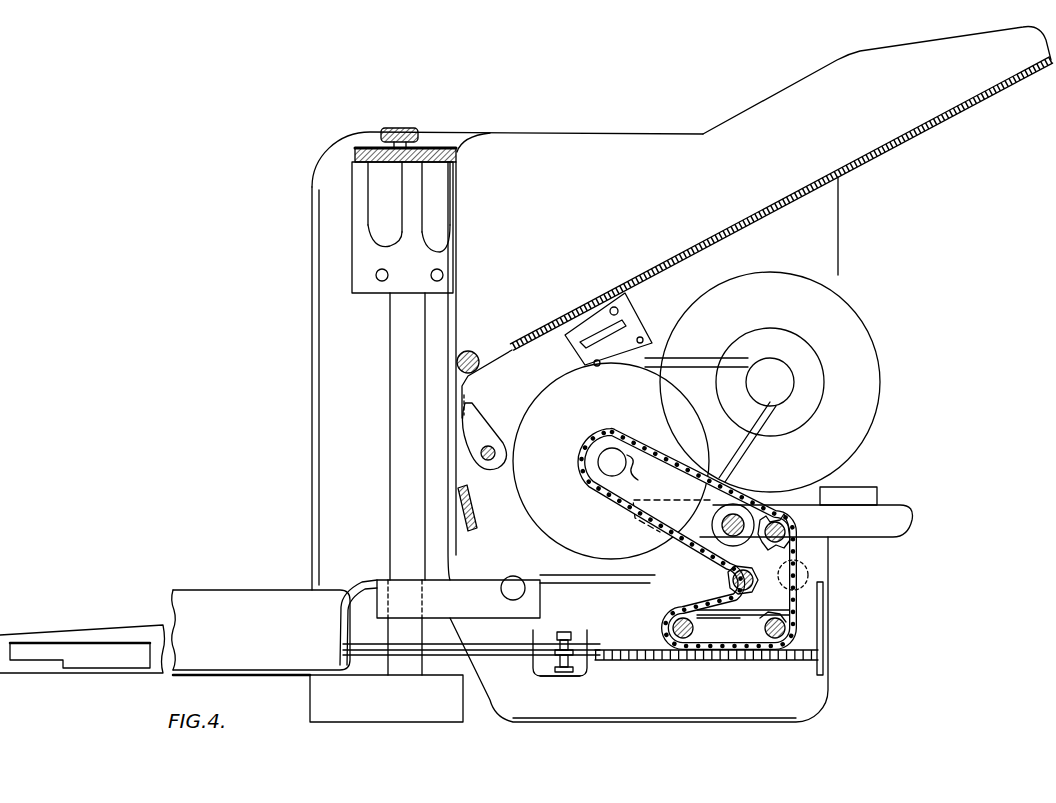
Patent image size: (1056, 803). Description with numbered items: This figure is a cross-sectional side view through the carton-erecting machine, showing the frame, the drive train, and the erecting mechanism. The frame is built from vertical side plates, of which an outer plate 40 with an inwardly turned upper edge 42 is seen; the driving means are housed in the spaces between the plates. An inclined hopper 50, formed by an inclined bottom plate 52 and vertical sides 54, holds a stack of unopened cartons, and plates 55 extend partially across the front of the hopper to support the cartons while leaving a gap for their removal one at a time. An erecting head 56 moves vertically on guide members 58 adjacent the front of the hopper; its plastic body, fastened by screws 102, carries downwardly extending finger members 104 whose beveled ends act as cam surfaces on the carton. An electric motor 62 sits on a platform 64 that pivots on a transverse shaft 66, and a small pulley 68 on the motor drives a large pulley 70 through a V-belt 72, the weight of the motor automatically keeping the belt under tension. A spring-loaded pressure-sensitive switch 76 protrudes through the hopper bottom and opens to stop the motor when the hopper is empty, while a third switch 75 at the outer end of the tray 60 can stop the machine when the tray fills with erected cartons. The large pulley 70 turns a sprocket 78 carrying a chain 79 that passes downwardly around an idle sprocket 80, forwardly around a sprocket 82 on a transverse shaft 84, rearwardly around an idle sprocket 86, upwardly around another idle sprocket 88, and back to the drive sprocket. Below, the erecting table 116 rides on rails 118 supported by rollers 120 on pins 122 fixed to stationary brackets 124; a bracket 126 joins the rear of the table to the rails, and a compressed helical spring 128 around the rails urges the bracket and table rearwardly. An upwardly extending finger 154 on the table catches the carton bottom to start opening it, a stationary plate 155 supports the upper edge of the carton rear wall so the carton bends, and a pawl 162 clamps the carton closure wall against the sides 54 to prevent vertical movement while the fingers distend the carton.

The outer plate 40 is at (343, 158).
The inwardly turned upper edge 42 is at (447, 136).
The inclined hopper 50 is at (765, 105).
The inclined bottom plate 52 is at (666, 275).
The vertical side 54 is at (804, 160).
The plate 55 is at (451, 305).
The erecting head 56 is at (362, 212).
The guide member 58 is at (390, 458).
The tray 60 is at (222, 648).
The electric motor 62 is at (862, 404).
The platform 64 is at (872, 524).
The transversely extending shaft 66 is at (720, 532).
The small pulley 68 is at (796, 378).
The large pulley 70 is at (526, 514).
The V-belt 72 is at (746, 450).
The third switch 75 is at (50, 662).
The pressure-sensitive switch 76 is at (627, 318).
The sprocket 78 is at (598, 442).
The chain 79 is at (610, 493).
The idle sprocket 80 is at (730, 573).
The sprocket 82 is at (698, 614).
The shaft 84 is at (662, 630).
The idle sprocket 86 is at (766, 640).
The idle sprocket 88 is at (796, 538).
The screw 102 is at (400, 127).
The finger member 104 is at (435, 247).
The erecting table 116 is at (345, 580).
The rail 118 is at (517, 650).
The roller 120 is at (574, 645).
The pin 122 is at (563, 631).
The stationary bracket 124 is at (580, 676).
The bracket 126 is at (824, 626).
The compressed helical spring 128 is at (684, 666).
The upwardly extending finger 154 is at (386, 580).
The stationary plate 155 is at (471, 491).
The pawl 162 is at (482, 430).